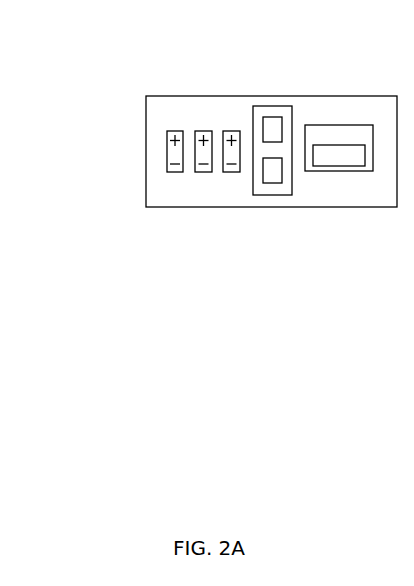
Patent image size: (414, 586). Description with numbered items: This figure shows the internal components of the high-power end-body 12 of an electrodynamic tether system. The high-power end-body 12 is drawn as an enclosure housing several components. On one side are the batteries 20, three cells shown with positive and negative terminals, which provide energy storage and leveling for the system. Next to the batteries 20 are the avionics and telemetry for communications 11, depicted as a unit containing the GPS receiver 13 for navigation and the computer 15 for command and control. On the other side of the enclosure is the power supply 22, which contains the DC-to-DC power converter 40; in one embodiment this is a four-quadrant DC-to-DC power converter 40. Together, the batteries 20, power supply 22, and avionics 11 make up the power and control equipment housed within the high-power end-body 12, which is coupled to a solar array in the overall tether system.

The high-power end-body 12 is at (132, 150).
The batteries 20 is at (230, 178).
The GPS receiver 13 is at (271, 117).
The avionics and telemetry for communications 11 is at (263, 117).
The computer 15 is at (272, 183).
The power supply 22 is at (340, 125).
The DC-to-DC power converter 40 is at (342, 166).